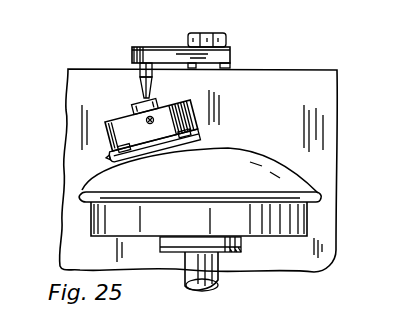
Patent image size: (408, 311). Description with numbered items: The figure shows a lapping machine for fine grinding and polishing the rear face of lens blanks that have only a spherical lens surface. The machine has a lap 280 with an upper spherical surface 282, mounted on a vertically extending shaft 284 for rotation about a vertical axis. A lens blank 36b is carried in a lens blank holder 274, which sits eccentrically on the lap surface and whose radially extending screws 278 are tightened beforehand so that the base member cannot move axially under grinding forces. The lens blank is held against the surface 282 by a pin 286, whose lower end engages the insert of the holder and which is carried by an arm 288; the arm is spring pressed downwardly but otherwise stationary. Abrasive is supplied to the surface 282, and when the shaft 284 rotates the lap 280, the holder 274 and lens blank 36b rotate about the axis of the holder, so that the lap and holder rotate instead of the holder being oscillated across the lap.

The arm 288 is at (162, 57).
The pin 286 is at (152, 83).
The lens blank holder 274 is at (122, 123).
The radially extending screws 278 is at (161, 132).
The lens blank 36b is at (207, 139).
The upper spherical surface 282 is at (251, 150).
The lap 280 is at (114, 186).
The vertically extending shaft 284 is at (200, 265).